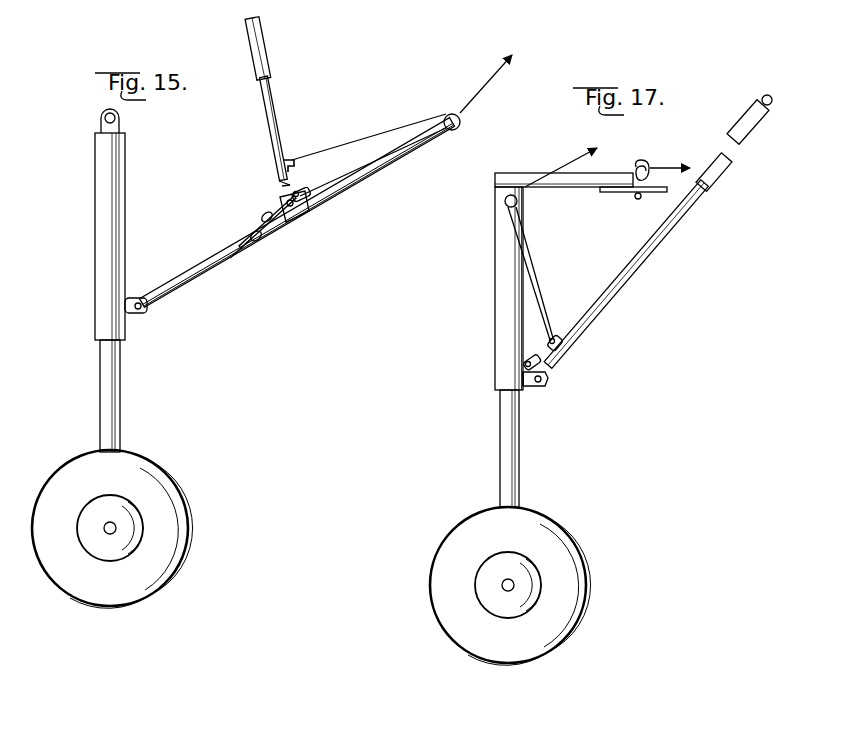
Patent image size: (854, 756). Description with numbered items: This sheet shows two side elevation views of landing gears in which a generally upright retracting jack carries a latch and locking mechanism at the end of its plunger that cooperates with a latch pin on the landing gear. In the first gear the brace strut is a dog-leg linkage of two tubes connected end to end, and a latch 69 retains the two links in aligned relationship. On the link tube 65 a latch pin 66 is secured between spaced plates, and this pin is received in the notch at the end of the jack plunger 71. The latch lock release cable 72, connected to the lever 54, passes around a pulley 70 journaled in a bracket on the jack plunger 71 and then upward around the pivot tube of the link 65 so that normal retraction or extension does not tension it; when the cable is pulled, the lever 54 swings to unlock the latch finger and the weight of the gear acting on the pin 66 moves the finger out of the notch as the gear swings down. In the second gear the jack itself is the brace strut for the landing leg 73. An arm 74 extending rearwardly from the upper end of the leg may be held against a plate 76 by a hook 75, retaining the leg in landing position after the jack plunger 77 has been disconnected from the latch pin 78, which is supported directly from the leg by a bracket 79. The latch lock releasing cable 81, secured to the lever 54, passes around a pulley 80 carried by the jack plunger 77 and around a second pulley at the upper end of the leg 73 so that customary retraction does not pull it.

In FIG. 15, the lever 54 is at (308, 195).
In FIG. 17, the lever 54 is at (526, 362).
In FIG. 15, the link tube 65 is at (360, 172).
In FIG. 15, the latch pin 66 is at (290, 207).
In FIG. 15, the latch 69 is at (263, 210).
In FIG. 15, the pulley 70 is at (292, 157).
In FIG. 15, the jack plunger 71 is at (272, 97).
In FIG. 15, the latch lock release cable 72 is at (363, 142).
In FIG. 17, the landing leg 73 is at (507, 268).
In FIG. 17, the arm 74 is at (532, 175).
In FIG. 17, the hook 75 is at (642, 160).
In FIG. 17, the plate 76 is at (620, 192).
In FIG. 17, the jack plunger 77 is at (677, 217).
In FIG. 17, the latch pin 78 is at (542, 384).
In FIG. 17, the bracket 79 is at (528, 378).
In FIG. 17, the pulley 80 is at (565, 341).
In FIG. 17, the latch lock releasing cable 81 is at (542, 300).